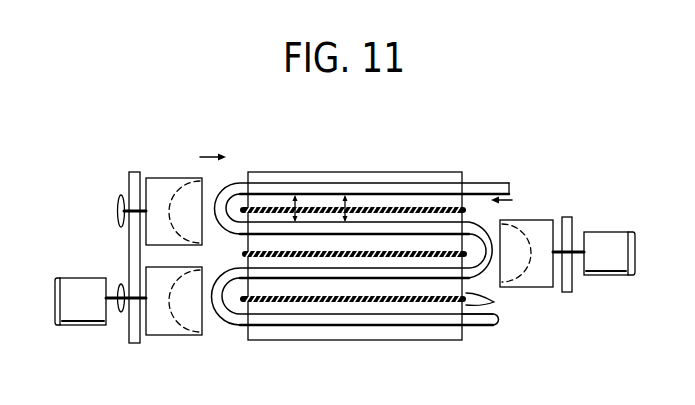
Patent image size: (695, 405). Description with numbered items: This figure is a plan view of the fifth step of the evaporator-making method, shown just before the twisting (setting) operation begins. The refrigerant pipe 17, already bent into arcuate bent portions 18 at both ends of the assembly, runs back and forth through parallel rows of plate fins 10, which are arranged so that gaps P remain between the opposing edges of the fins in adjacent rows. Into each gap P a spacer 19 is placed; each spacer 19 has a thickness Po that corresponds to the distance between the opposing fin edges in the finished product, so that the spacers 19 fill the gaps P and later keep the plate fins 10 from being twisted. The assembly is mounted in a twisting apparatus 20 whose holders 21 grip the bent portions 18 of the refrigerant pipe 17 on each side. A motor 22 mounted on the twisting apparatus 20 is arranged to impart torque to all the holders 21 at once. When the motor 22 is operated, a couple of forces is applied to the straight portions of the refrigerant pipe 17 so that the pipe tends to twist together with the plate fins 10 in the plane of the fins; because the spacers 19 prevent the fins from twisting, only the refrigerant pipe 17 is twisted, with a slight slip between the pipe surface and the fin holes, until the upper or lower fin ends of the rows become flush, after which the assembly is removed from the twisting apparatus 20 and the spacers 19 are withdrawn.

The plate fins 10 is at (451, 172).
The refrigerant pipe 17 is at (484, 327).
The bent portions 18 is at (237, 183).
The spacers 19 is at (405, 206).
The twisting apparatus 20 is at (103, 240).
The holders 21 is at (165, 336).
The motor 22 is at (75, 279).
The gaps P is at (287, 206).
The thickness Po is at (339, 196).